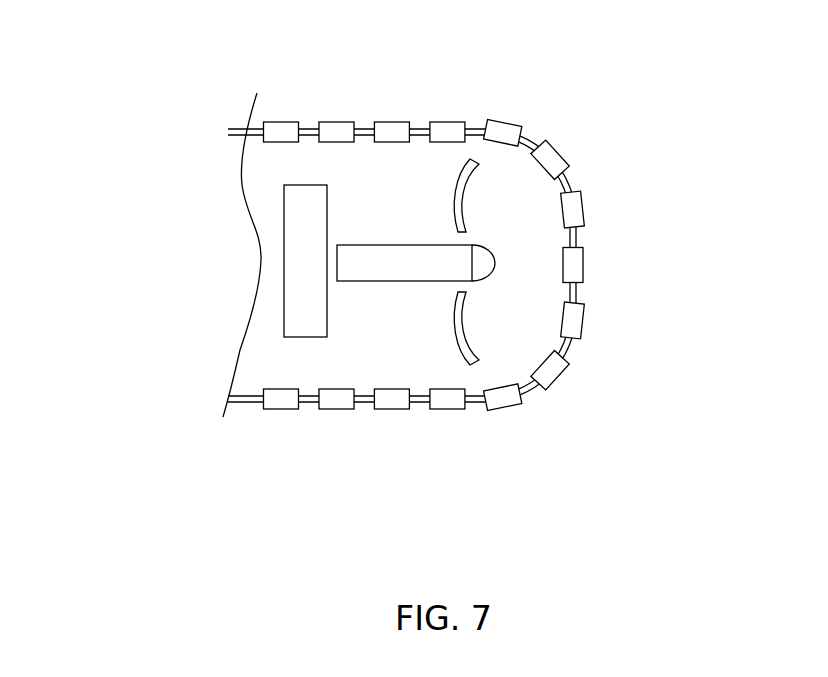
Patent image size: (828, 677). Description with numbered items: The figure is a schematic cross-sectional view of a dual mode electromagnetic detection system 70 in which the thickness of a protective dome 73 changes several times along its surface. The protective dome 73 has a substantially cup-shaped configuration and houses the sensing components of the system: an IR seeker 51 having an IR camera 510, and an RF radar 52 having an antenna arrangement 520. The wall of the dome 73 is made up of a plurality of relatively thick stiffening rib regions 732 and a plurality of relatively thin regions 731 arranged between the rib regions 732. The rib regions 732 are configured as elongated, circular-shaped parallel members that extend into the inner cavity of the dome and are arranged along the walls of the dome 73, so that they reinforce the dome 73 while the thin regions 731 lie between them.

The dual mode electromagnetic detection system 70 is at (177, 383).
The protective dome 73 is at (588, 363).
The relatively thin regions 731 is at (472, 122).
The stiffening rib regions 732 is at (278, 122).
The RF radar 52 is at (311, 185).
The IR seeker 51 is at (360, 245).
The IR camera 510 is at (477, 258).
The antenna arrangement 520 is at (466, 326).